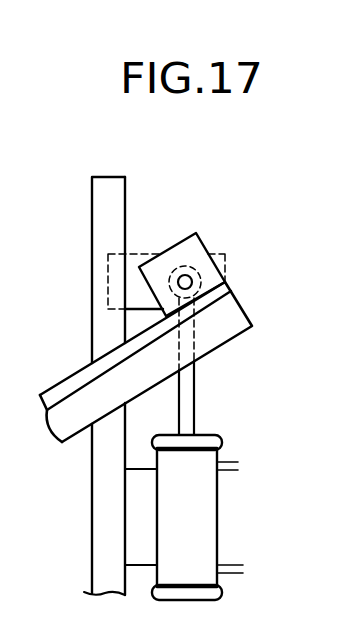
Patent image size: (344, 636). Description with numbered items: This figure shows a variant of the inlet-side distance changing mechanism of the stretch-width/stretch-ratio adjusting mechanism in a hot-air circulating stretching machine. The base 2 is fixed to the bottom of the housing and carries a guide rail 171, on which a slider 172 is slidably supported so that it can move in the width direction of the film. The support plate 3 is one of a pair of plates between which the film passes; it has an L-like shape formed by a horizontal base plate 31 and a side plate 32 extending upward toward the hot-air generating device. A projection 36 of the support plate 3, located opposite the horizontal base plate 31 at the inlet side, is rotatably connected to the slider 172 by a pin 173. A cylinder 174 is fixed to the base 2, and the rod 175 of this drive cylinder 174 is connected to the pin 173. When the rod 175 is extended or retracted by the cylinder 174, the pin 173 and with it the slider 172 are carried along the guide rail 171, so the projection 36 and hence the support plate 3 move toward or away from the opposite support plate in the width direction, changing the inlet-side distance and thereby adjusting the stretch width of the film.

The base 2 is at (128, 356).
The guide rail 171 is at (118, 207).
The projection 36 is at (192, 241).
The slider 172 is at (225, 257).
The pin 173 is at (192, 281).
The horizontal base plate 31 is at (237, 314).
The support plate 3 is at (183, 324).
The side plate 32 is at (124, 349).
The rod 175 is at (187, 415).
The cylinder 174 is at (205, 507).